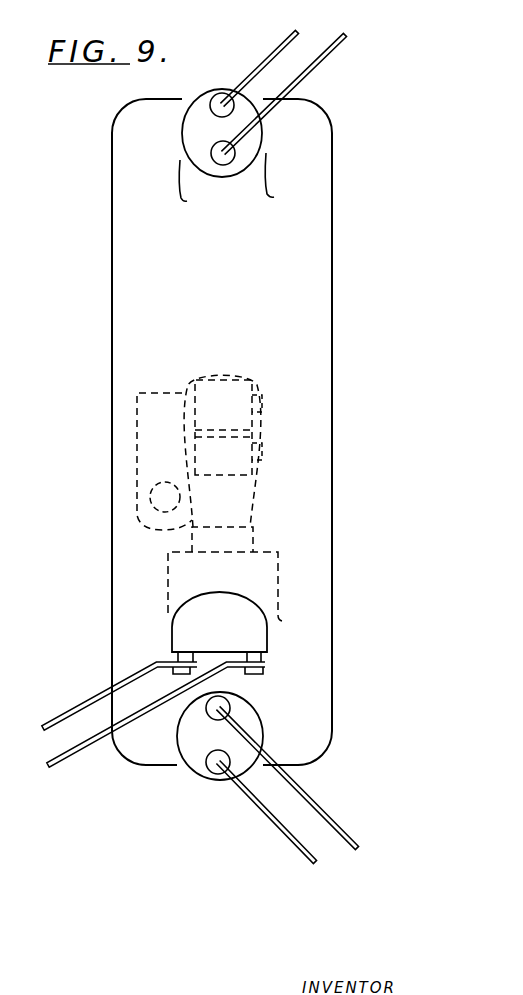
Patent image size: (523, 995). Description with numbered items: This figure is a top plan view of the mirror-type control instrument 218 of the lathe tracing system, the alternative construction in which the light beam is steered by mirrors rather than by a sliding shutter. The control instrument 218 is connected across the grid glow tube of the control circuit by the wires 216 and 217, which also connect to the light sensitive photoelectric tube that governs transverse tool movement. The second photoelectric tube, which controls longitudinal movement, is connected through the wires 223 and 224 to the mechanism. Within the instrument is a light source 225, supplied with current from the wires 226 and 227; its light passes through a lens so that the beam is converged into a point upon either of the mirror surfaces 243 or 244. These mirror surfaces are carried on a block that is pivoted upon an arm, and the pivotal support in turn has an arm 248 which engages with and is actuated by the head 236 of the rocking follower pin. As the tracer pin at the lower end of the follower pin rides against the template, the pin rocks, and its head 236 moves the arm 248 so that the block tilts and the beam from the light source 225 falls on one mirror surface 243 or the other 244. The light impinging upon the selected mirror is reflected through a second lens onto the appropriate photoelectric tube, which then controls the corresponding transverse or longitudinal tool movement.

The wire 216 is at (302, 853).
The wire 217 is at (342, 828).
The control instrument 218 is at (110, 594).
The wire 223 is at (334, 50).
The wire 224 is at (297, 32).
The light source 225 is at (233, 376).
The wire 226 is at (66, 767).
The wire 227 is at (70, 707).
The head 236 is at (150, 494).
The mirror surface 243 is at (252, 415).
The mirror surface 244 is at (262, 445).
The arm 248 is at (137, 515).